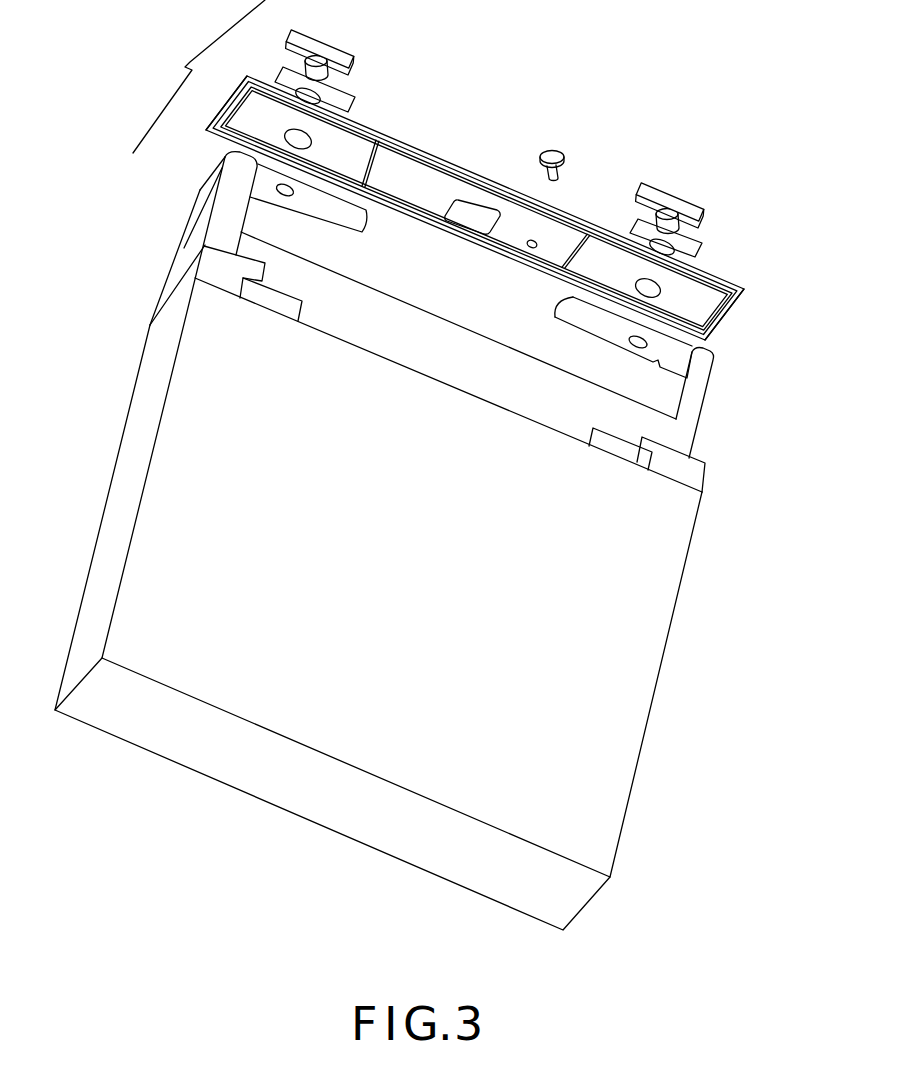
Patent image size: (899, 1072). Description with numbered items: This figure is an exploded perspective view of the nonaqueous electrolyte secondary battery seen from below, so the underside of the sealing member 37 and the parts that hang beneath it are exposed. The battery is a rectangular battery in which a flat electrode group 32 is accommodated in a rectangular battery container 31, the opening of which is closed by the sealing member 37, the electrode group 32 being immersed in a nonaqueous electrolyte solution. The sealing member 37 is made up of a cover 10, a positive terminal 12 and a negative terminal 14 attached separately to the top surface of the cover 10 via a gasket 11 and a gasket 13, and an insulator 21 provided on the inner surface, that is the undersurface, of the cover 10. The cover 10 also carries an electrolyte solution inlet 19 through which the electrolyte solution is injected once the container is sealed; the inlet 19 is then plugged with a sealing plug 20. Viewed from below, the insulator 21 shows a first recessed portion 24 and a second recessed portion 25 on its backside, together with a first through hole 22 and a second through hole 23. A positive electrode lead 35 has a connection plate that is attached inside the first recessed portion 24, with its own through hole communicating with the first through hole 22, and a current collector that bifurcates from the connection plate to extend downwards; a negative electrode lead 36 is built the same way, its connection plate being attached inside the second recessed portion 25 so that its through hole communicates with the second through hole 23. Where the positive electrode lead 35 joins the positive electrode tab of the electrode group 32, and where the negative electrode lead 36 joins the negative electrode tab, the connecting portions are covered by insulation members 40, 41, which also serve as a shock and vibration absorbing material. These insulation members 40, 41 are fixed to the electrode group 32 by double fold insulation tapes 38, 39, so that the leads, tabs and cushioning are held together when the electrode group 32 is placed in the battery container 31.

The cover 10 is at (476, 158).
The gasket 11 is at (283, 82).
The positive terminal 12 is at (326, 42).
The gasket 13 is at (697, 256).
The negative terminal 14 is at (686, 196).
The electrolyte solution inlet 19 is at (532, 251).
The sealing plug 20 is at (556, 150).
The insulator 21 is at (452, 246).
The first through hole 22 is at (304, 144).
The second through hole 23 is at (650, 290).
The first recessed portion 24 is at (234, 142).
The second recessed portion 25 is at (717, 318).
The battery container 31 is at (640, 732).
The electrode group 32 is at (360, 305).
The positive electrode lead 35 is at (172, 215).
The negative electrode lead 36 is at (726, 410).
The sealing member 37 is at (199, 76).
The double fold insulation tape 38 is at (270, 303).
The double fold insulation tape 39 is at (606, 445).
The insulation member 40 is at (162, 298).
The insulation member 41 is at (700, 470).